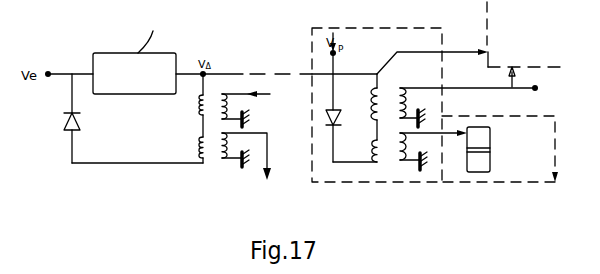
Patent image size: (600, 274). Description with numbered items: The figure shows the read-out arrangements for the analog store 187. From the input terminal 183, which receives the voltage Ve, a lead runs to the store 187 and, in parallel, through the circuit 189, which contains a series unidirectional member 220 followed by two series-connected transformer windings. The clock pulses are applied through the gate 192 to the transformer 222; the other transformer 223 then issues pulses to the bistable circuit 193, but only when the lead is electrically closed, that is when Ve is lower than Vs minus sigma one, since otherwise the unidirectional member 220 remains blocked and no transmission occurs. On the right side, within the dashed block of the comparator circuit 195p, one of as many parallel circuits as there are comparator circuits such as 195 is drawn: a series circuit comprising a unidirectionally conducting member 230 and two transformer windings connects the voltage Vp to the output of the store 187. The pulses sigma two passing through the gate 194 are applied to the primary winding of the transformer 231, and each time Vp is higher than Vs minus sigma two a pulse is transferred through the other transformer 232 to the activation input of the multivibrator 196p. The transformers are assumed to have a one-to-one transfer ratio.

The input terminal 183 is at (48, 70).
The analog store 187 is at (176, 53).
The read-out circuit 189 is at (137, 173).
The gate 192 is at (258, 103).
The bistable circuit 193 is at (255, 167).
The gate 194 is at (487, 83).
The comparator circuit 195 is at (526, 34).
The comparator circuit (p-th) 195p is at (382, 118).
The multivibrator (p-th) 196p is at (479, 149).
The unidirectional member 220 is at (84, 123).
The transformer 222 is at (195, 104).
The transformer 223 is at (210, 150).
The unidirectionally conducting member 230 is at (345, 120).
The transformer 231 is at (398, 101).
The transformer 232 is at (399, 157).